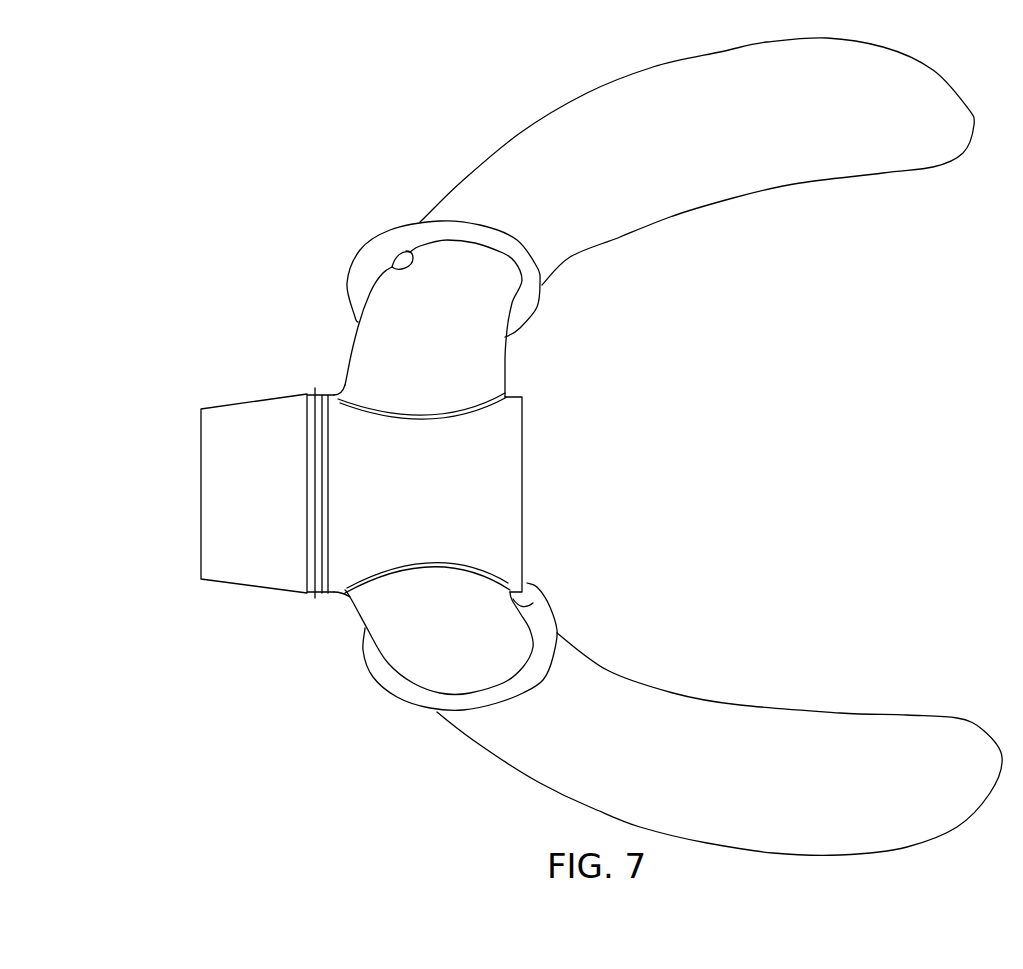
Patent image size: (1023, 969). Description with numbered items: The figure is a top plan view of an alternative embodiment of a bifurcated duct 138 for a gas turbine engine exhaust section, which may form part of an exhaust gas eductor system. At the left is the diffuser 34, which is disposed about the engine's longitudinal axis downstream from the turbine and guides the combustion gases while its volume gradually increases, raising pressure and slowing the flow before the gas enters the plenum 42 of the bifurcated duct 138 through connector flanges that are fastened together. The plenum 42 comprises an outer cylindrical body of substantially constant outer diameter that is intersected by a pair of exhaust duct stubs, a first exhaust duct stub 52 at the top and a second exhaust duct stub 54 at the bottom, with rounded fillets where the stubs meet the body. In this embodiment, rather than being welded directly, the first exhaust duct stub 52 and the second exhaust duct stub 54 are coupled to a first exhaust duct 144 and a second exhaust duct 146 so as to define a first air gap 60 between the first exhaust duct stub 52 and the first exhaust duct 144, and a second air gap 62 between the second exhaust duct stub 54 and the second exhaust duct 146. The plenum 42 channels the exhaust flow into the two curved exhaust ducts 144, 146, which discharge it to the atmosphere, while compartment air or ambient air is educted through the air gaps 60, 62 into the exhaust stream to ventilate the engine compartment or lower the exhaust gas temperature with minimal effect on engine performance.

The diffuser 34 is at (233, 399).
The plenum 42 is at (531, 467).
The first exhaust duct stub 52 is at (507, 364).
The second exhaust duct stub 54 is at (527, 586).
The first air gap 60 is at (390, 266).
The second air gap 62 is at (522, 668).
The bifurcated duct 138 is at (711, 447).
The first exhaust duct 144 is at (867, 167).
The second exhaust duct 146 is at (833, 720).